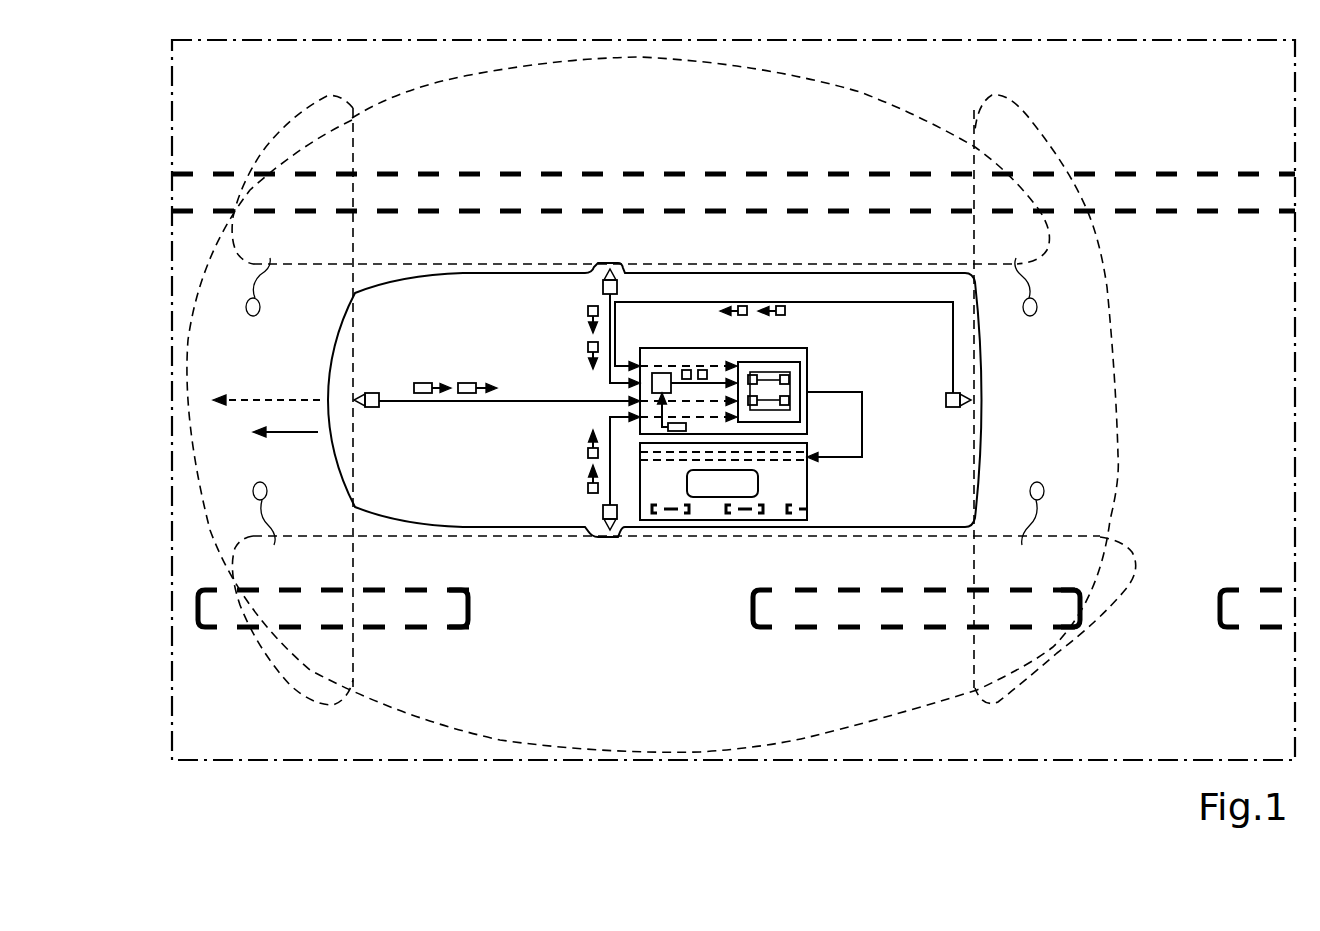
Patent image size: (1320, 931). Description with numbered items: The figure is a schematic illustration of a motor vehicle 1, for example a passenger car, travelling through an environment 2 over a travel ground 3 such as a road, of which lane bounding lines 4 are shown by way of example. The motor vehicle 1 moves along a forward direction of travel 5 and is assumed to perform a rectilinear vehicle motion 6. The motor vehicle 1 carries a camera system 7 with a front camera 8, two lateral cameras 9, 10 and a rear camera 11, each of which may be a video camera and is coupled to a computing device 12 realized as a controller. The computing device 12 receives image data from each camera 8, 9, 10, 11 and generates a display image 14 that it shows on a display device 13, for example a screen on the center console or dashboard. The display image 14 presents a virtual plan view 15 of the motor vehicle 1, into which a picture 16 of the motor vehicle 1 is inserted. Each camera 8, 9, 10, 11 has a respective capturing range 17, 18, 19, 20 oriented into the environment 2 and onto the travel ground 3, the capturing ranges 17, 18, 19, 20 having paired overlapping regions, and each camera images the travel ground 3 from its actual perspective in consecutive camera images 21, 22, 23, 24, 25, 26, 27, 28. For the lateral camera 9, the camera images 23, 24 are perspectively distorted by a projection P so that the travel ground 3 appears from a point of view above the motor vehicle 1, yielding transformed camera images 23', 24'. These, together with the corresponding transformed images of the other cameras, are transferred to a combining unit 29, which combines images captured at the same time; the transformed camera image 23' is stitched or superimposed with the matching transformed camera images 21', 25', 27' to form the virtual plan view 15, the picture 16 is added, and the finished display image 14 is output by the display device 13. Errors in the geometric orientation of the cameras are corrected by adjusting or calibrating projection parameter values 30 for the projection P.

The motor vehicle 1 is at (988, 440).
The environment 2 is at (648, 134).
The travel ground 3 is at (263, 350).
The lane bounding lines 4 is at (792, 172).
The forward direction of travel 5 is at (300, 434).
The rectilinear vehicle motion 6 is at (251, 402).
The camera system 7 is at (873, 505).
The front camera 8 is at (372, 393).
The lateral camera 9 is at (605, 283).
The lateral camera 10 is at (603, 512).
The rear camera 11 is at (950, 408).
The computing device 12 is at (808, 357).
The display device 13 is at (650, 520).
The display image 14 is at (800, 470).
The virtual plan view 15 is at (765, 512).
The picture of the motor vehicle 16 is at (716, 497).
The capturing range 17 is at (272, 139).
The capturing range 18 is at (925, 119).
The capturing range 19 is at (805, 738).
The capturing range 20 is at (1118, 455).
The camera image 21 is at (478, 357).
The camera image 22 is at (427, 383).
The camera image 23 is at (557, 342).
The camera image 24 is at (557, 306).
The camera image 25 is at (557, 438).
The camera image 26 is at (588, 488).
The camera image 27 is at (738, 271).
The camera image 28 is at (780, 306).
The combining unit 29 is at (790, 363).
The projection parameter values 30 is at (676, 431).
The transformed camera image 21' is at (851, 408).
The transformed camera image 23' is at (738, 347).
The transformed camera image 24' is at (671, 347).
The transformed camera image 25' is at (838, 426).
The transformed camera image 27' is at (828, 372).